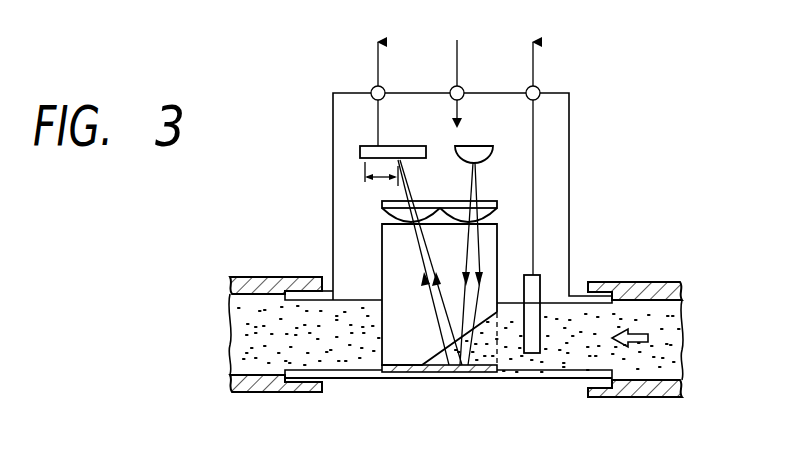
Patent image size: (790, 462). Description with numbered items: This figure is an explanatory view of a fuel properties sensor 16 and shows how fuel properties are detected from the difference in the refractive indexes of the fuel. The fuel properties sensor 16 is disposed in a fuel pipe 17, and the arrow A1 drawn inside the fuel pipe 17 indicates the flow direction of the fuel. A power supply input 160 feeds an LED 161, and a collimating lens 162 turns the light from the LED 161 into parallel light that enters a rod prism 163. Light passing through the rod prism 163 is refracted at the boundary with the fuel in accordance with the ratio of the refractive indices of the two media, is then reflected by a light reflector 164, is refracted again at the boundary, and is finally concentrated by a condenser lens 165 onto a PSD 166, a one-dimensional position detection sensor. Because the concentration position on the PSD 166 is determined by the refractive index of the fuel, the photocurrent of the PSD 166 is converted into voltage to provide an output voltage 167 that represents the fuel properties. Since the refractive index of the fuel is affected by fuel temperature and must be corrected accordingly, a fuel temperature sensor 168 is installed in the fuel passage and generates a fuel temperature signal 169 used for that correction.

The fuel properties sensor 16 is at (574, 118).
The fuel pipe 17 is at (652, 292).
The power supply input 160 is at (462, 61).
The LED 161 is at (480, 145).
The collimating lens 162 is at (497, 212).
The rod prism 163 is at (393, 248).
The light reflector 164 is at (418, 378).
The condenser lens 165 is at (382, 212).
The PSD 166 is at (410, 145).
The output voltage 167 is at (383, 61).
The fuel temperature sensor 168 is at (543, 283).
The fuel temperature signal 169 is at (539, 61).
The arrow A1 is at (628, 345).